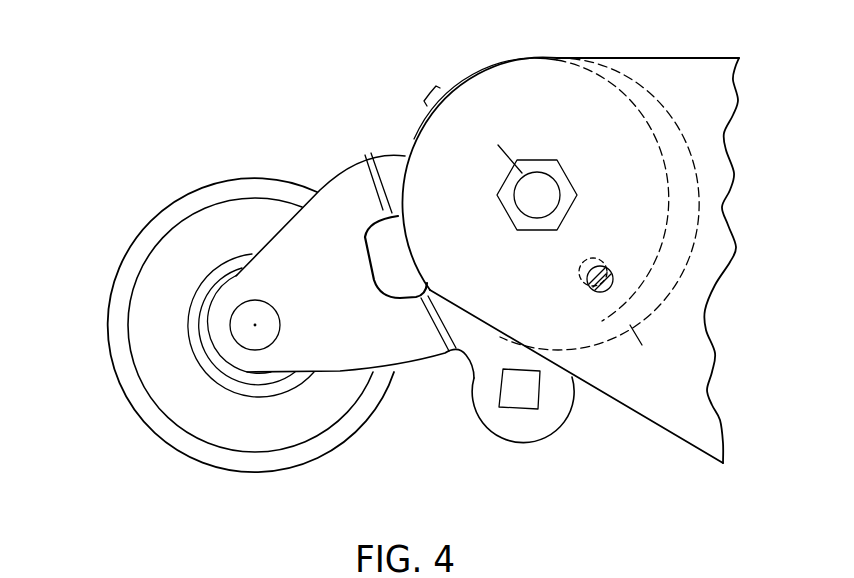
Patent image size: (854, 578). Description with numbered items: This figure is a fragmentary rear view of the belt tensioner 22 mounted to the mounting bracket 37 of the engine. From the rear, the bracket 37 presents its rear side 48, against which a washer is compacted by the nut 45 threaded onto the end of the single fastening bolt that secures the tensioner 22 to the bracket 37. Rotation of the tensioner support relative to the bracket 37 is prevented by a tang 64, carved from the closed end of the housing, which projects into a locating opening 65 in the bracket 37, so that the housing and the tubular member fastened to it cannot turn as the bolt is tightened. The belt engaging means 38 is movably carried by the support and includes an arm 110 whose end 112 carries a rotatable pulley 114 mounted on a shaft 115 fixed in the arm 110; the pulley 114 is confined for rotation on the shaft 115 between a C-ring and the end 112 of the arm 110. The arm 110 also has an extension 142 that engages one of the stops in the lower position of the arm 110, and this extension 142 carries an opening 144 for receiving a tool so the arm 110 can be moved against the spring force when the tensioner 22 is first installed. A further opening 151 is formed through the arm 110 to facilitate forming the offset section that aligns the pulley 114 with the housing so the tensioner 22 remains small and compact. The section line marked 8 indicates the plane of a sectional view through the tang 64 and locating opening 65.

The section line 8- 8 is at (515, 128).
The belt tensioner 22 is at (358, 141).
The mounting bracket 37 is at (692, 72).
The belt engaging means 38 is at (222, 363).
The nut 45 is at (572, 197).
The rear side of the bracket 48 is at (707, 253).
The tang 64 is at (590, 285).
The locating opening 65 is at (590, 260).
The arm 110 is at (413, 357).
The end of the arm 112 is at (217, 325).
The pulley 114 is at (148, 427).
The shaft 115 is at (260, 313).
The extension 142 is at (523, 433).
The opening 144 is at (520, 410).
The opening 151 is at (378, 293).